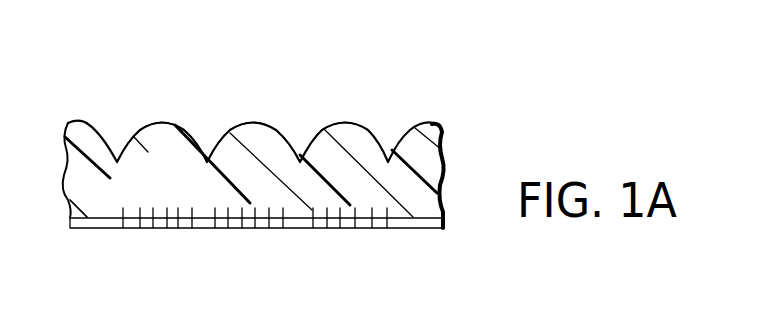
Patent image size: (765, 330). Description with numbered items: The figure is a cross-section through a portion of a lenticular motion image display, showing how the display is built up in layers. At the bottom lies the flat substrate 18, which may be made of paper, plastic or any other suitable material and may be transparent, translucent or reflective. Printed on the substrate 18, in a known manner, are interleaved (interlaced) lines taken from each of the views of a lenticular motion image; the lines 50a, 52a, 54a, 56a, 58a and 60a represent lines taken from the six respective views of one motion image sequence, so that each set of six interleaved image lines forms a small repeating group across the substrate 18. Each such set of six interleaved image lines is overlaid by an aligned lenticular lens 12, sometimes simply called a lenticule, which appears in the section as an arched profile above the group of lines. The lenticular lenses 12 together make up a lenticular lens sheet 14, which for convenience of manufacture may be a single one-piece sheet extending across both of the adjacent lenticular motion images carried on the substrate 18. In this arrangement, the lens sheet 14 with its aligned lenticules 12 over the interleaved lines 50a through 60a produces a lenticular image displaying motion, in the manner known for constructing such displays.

The lenticular lens 12 is at (160, 130).
The lenticular lens sheet 14 is at (428, 93).
The substrate 18 is at (432, 223).
The line 50a is at (122, 230).
The line 52a is at (140, 230).
The line 54a is at (154, 230).
The line 56a is at (167, 230).
The line 58a is at (177, 203).
The line 60a is at (188, 203).